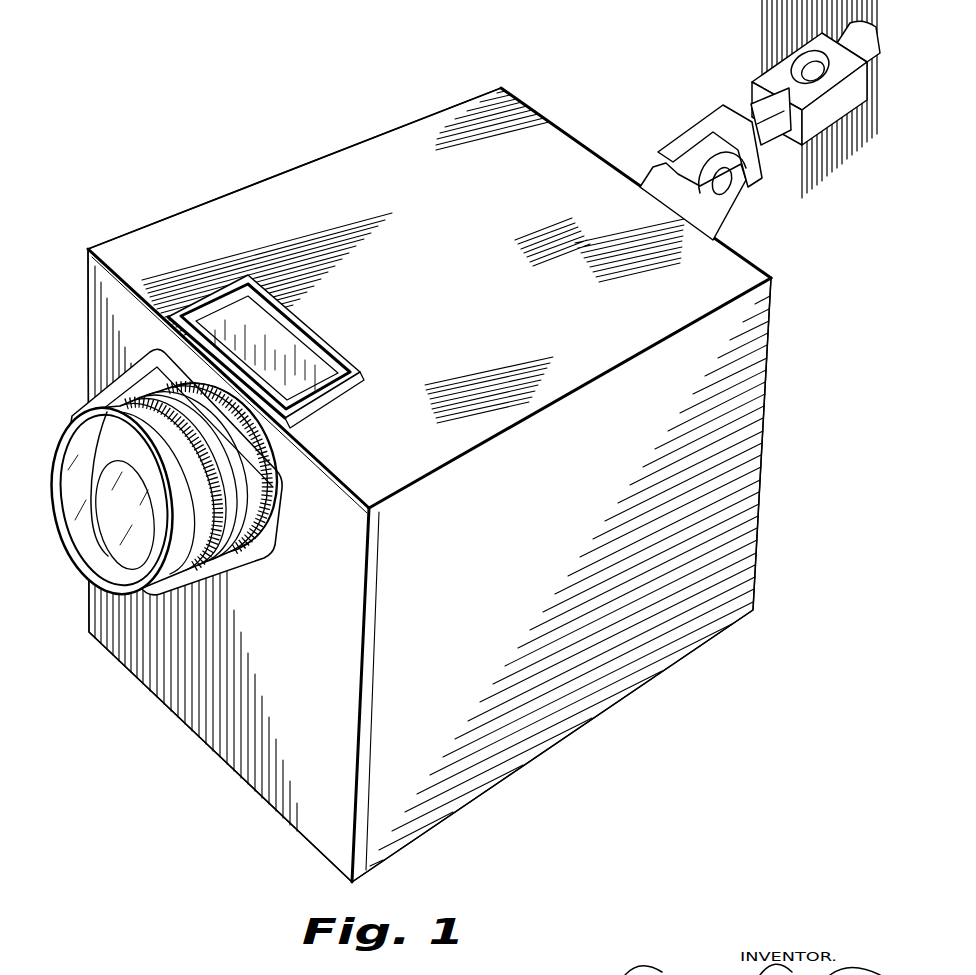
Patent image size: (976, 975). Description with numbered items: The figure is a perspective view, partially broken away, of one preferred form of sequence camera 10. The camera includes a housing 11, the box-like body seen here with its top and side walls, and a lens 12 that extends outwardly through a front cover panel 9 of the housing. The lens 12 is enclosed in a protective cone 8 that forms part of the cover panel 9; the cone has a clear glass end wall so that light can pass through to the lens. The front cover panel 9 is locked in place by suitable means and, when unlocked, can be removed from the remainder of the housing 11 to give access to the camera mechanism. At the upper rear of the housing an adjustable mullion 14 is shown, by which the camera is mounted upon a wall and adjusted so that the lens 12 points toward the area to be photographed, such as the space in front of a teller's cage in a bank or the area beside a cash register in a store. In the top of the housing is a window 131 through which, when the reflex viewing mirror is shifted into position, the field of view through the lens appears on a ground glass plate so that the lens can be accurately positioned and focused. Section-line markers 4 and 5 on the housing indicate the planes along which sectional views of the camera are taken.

The sequence camera 10 is at (452, 48).
The housing 11 is at (413, 257).
The front cover panel 9 is at (201, 548).
The window 131 is at (293, 358).
The protective cone 8 is at (261, 551).
The lens 12 is at (229, 511).
The adjustable mullion 14 is at (719, 87).
The section line 4- 4 is at (80, 265).
The section line 5- 5 is at (63, 295).